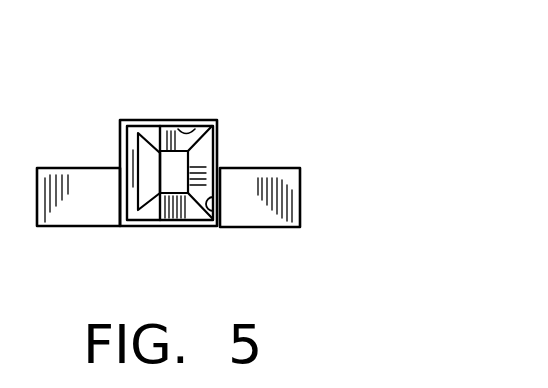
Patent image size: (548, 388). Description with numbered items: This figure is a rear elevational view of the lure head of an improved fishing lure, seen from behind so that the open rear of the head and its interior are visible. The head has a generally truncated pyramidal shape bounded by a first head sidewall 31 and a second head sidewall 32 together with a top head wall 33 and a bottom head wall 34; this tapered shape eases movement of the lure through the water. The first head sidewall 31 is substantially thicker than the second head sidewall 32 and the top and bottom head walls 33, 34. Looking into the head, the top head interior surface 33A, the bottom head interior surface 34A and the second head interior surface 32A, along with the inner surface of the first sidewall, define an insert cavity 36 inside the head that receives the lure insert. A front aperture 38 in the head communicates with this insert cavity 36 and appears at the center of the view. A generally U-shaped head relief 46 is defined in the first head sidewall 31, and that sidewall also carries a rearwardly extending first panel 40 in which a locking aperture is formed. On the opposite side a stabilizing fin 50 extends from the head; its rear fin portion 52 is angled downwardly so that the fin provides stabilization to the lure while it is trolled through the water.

The first head sidewall 31 is at (119, 121).
The top head wall 33 is at (142, 119).
The top head interior surface 33A is at (173, 119).
The insert cavity 36 is at (213, 119).
The front aperture 38 is at (178, 166).
The second head sidewall 32 is at (217, 160).
The head relief 46 is at (142, 169).
The bottom head wall 34 is at (218, 228).
The bottom head interior surface 34A is at (167, 227).
The second head interior surface 32A is at (229, 227).
The first panel 40 is at (119, 206).
The stabilizing fin 50 is at (298, 167).
The rear fin portion 52 is at (302, 213).